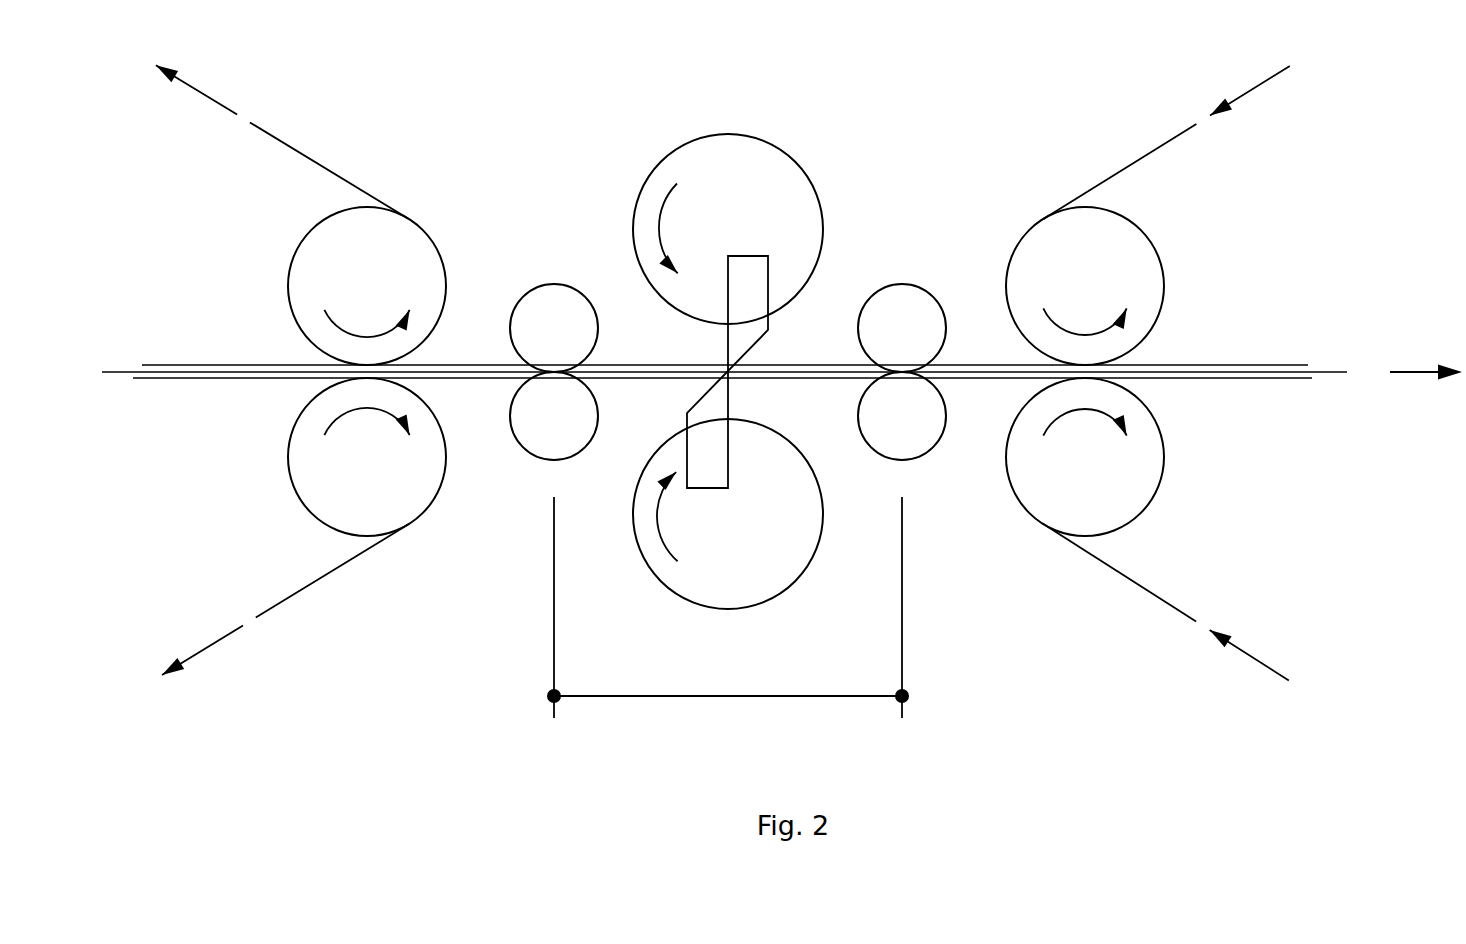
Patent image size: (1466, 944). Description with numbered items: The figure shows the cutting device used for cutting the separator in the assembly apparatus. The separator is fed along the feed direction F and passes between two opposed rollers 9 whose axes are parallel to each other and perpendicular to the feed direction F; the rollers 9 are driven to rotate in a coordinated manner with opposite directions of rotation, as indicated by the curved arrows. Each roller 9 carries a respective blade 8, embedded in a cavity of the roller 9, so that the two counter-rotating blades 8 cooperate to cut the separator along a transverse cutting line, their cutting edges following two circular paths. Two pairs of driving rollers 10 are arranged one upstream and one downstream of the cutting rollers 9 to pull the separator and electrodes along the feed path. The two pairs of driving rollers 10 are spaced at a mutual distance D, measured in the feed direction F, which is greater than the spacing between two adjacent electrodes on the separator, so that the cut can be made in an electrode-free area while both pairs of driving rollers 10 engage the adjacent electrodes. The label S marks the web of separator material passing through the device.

The blade 8 is at (733, 342).
The roller 9 is at (775, 158).
The driving rollers 10 is at (907, 305).
The web / substrate S is at (205, 373).
The feed direction F is at (1407, 371).
The mutual distance D is at (728, 607).